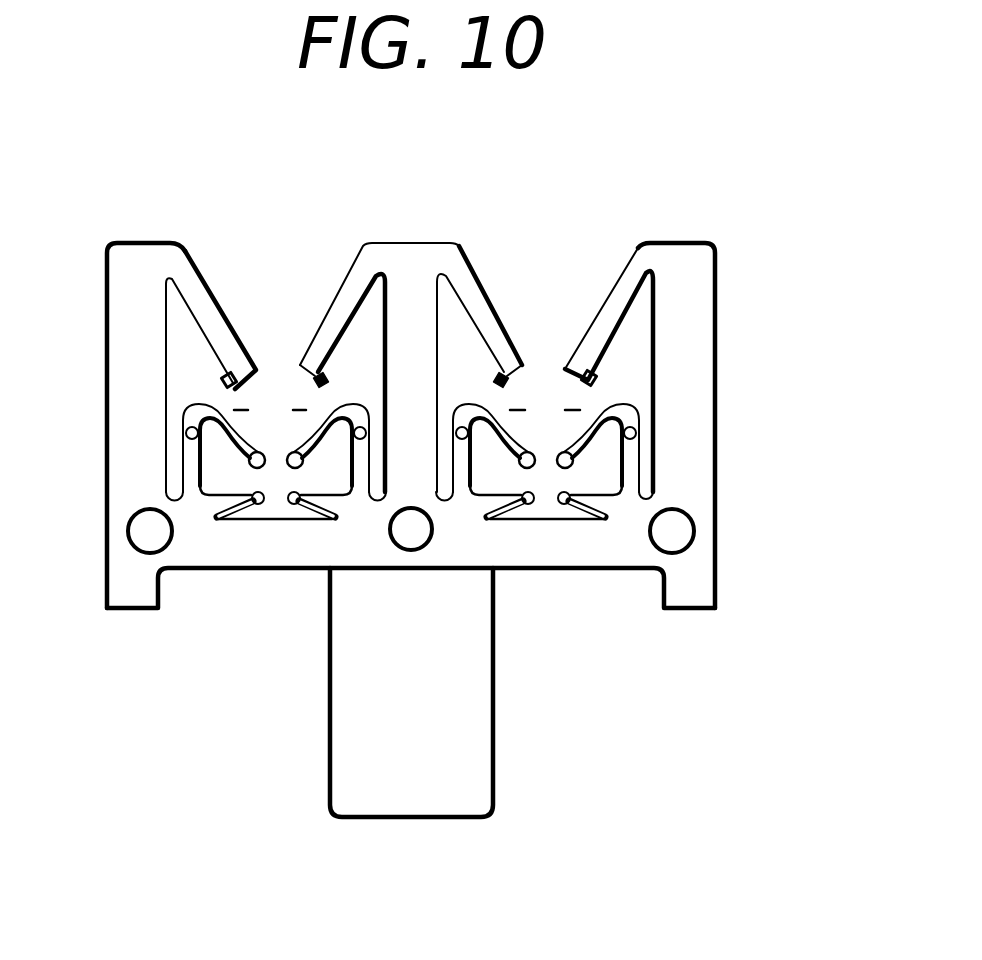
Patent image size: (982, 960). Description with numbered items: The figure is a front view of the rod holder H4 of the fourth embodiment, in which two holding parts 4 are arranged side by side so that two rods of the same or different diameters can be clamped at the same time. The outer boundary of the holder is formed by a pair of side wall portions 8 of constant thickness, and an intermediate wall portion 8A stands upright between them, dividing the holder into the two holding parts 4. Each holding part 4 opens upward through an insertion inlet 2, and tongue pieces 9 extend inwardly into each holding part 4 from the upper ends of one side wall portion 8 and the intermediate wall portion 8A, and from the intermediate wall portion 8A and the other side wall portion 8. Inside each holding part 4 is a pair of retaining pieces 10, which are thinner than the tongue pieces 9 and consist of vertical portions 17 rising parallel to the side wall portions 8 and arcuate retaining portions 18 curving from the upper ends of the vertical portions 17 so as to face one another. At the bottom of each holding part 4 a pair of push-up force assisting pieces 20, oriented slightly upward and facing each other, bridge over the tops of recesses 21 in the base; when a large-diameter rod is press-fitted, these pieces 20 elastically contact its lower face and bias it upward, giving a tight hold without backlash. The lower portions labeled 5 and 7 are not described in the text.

The rod holder H4 is at (445, 489).
The insertion inlet 2 is at (418, 436).
The holding part 4 is at (407, 410).
The bottom projection 5 is at (355, 743).
The bottom wall 7 is at (242, 552).
The side wall portion 8 is at (135, 413).
The intermediate wall portion 8A is at (407, 312).
The tongue piece 9 is at (230, 328).
The retaining piece 10 is at (152, 474).
The vertical portion 17 is at (632, 448).
The arcuate retaining portion 18 is at (228, 440).
The push-up force assisting piece 20 is at (217, 522).
The recess 21 is at (258, 540).